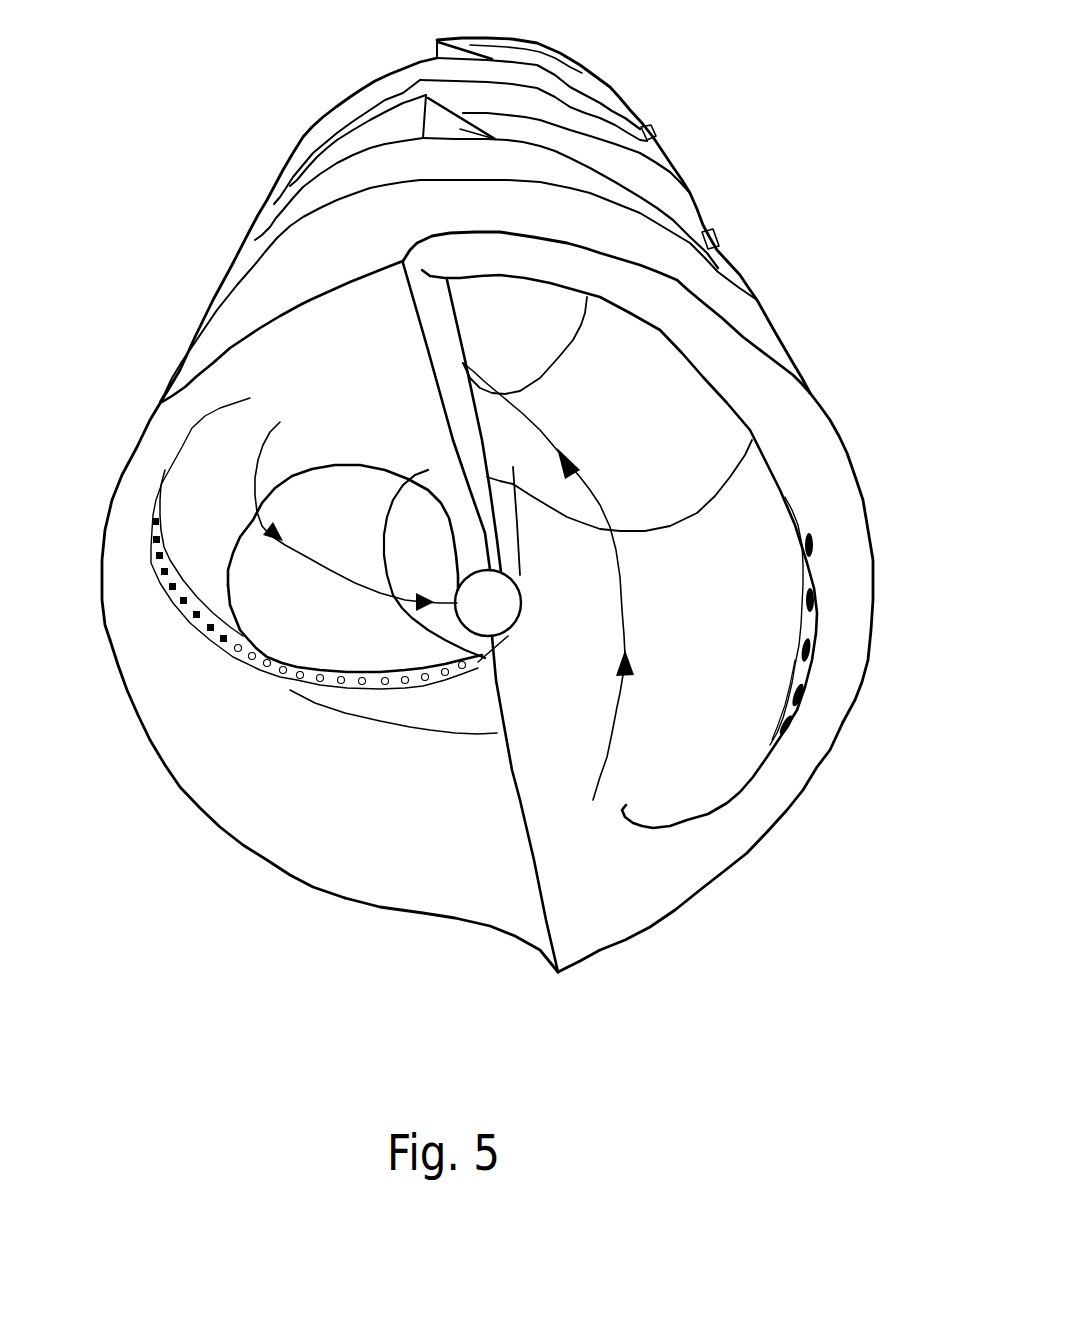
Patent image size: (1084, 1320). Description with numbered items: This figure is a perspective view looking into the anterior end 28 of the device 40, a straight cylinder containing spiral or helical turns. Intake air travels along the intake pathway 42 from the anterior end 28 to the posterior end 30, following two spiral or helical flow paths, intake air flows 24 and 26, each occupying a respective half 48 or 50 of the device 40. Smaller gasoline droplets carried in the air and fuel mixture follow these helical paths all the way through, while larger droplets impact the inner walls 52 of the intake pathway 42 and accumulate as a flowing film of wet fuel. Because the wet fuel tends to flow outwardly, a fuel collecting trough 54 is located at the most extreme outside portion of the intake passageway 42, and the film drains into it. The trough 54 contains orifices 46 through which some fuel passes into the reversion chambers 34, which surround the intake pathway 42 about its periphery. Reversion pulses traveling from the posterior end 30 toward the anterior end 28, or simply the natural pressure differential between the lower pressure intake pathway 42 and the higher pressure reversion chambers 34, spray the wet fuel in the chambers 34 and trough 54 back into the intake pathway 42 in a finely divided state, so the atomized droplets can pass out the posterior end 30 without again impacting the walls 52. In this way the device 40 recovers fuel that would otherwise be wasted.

The posterior end 30 is at (512, 361).
The reversion chambers 34 is at (368, 137).
The intake air flow 24 is at (272, 440).
The intake air flow 26 is at (617, 702).
The walls 52 is at (367, 530).
The half 50 is at (692, 464).
The orifices 46 is at (352, 686).
The fuel collecting trough 54 is at (227, 645).
The half 48 is at (412, 874).
The intake pathway 42 is at (417, 947).
The anterior end 28 is at (173, 917).
The device 40 is at (780, 970).